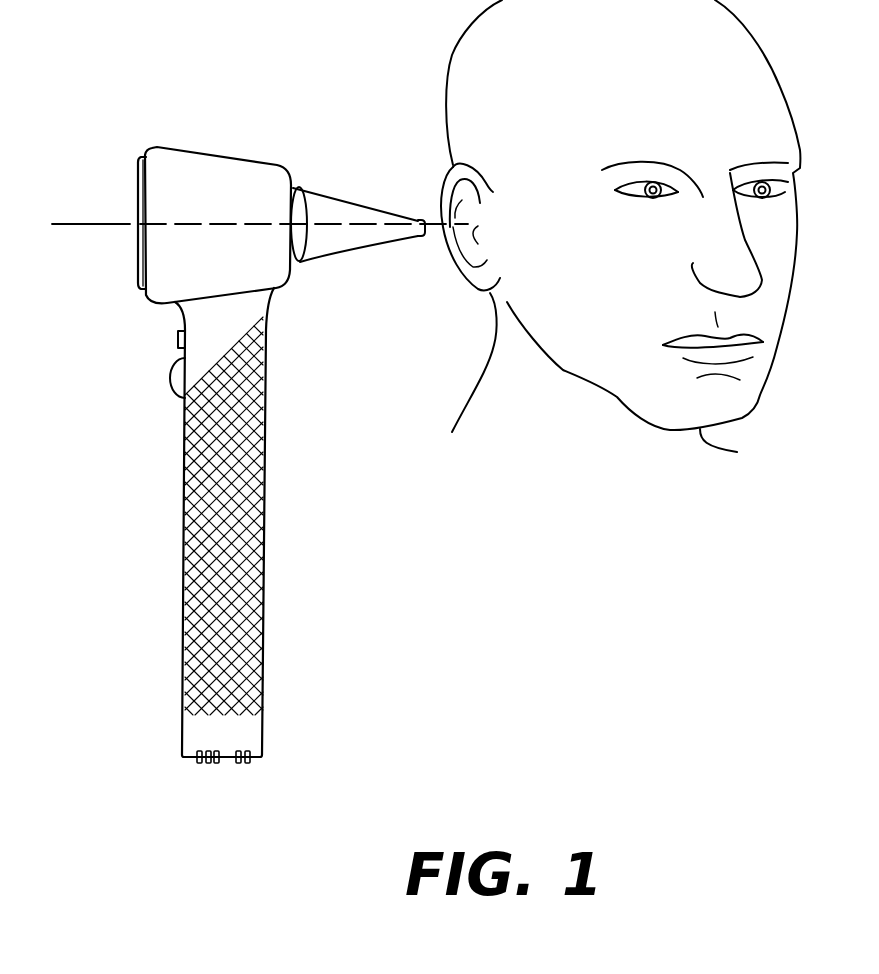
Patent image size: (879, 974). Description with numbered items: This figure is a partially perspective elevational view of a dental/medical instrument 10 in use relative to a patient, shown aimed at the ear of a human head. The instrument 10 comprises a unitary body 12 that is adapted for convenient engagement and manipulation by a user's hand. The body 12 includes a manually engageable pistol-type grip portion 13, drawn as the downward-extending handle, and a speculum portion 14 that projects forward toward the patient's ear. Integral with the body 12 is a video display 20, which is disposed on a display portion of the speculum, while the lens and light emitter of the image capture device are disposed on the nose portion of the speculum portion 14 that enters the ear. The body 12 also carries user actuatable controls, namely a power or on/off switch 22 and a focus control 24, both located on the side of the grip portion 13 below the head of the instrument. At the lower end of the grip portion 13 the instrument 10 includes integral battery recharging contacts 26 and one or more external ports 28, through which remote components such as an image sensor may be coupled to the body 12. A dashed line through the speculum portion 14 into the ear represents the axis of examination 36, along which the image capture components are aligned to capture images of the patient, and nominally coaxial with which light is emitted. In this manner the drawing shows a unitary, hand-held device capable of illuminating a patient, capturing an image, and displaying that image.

The dental/medical instrument 10 is at (120, 91).
The body 12 is at (302, 478).
The pistol-type grip portion 13 is at (197, 533).
The speculum portion 14 is at (330, 212).
The video display 20 is at (140, 176).
The power switch 22 is at (178, 340).
The focus control 24 is at (178, 381).
The battery recharging contacts 26 is at (207, 765).
The external port 28 is at (246, 765).
The axis of examination 36 is at (75, 226).